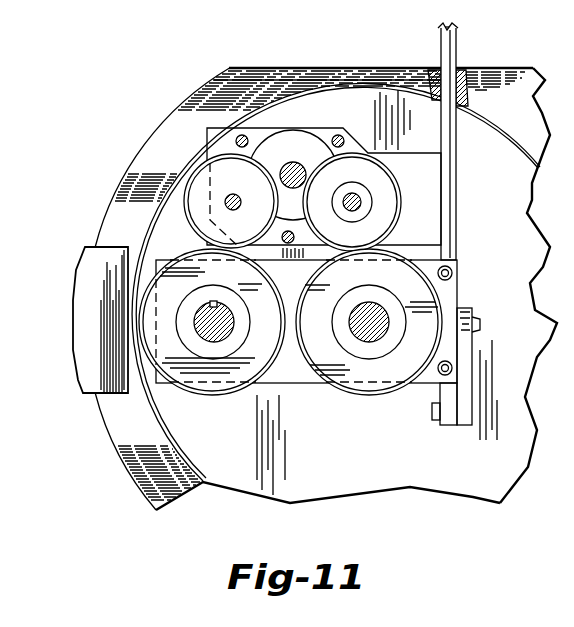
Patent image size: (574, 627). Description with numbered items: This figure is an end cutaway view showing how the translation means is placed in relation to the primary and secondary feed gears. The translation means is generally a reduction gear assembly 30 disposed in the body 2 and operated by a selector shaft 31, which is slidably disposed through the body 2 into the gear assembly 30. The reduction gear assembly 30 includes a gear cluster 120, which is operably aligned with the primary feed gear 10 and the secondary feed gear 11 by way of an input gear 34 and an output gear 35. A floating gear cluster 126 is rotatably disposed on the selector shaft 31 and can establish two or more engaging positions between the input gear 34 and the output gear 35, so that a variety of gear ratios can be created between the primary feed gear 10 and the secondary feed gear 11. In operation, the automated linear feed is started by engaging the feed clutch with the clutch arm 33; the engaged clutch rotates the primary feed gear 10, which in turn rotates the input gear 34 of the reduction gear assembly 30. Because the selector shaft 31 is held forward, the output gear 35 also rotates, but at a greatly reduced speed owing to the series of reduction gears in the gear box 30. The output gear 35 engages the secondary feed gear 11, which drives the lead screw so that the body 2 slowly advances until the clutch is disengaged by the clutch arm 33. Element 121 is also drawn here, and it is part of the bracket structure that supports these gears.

The body 2 is at (316, 68).
The primary feed gear 10 is at (370, 388).
The secondary feed gear 11 is at (217, 387).
The reduction gear assembly 30 is at (250, 130).
The selector shaft 31 is at (362, 193).
The clutch arm 33 is at (458, 190).
The input gear 34 is at (390, 218).
The output gear 35 is at (195, 203).
The gear cluster 120 is at (226, 193).
The bracket plate 121 is at (384, 162).
The floating gear cluster 126 is at (305, 150).